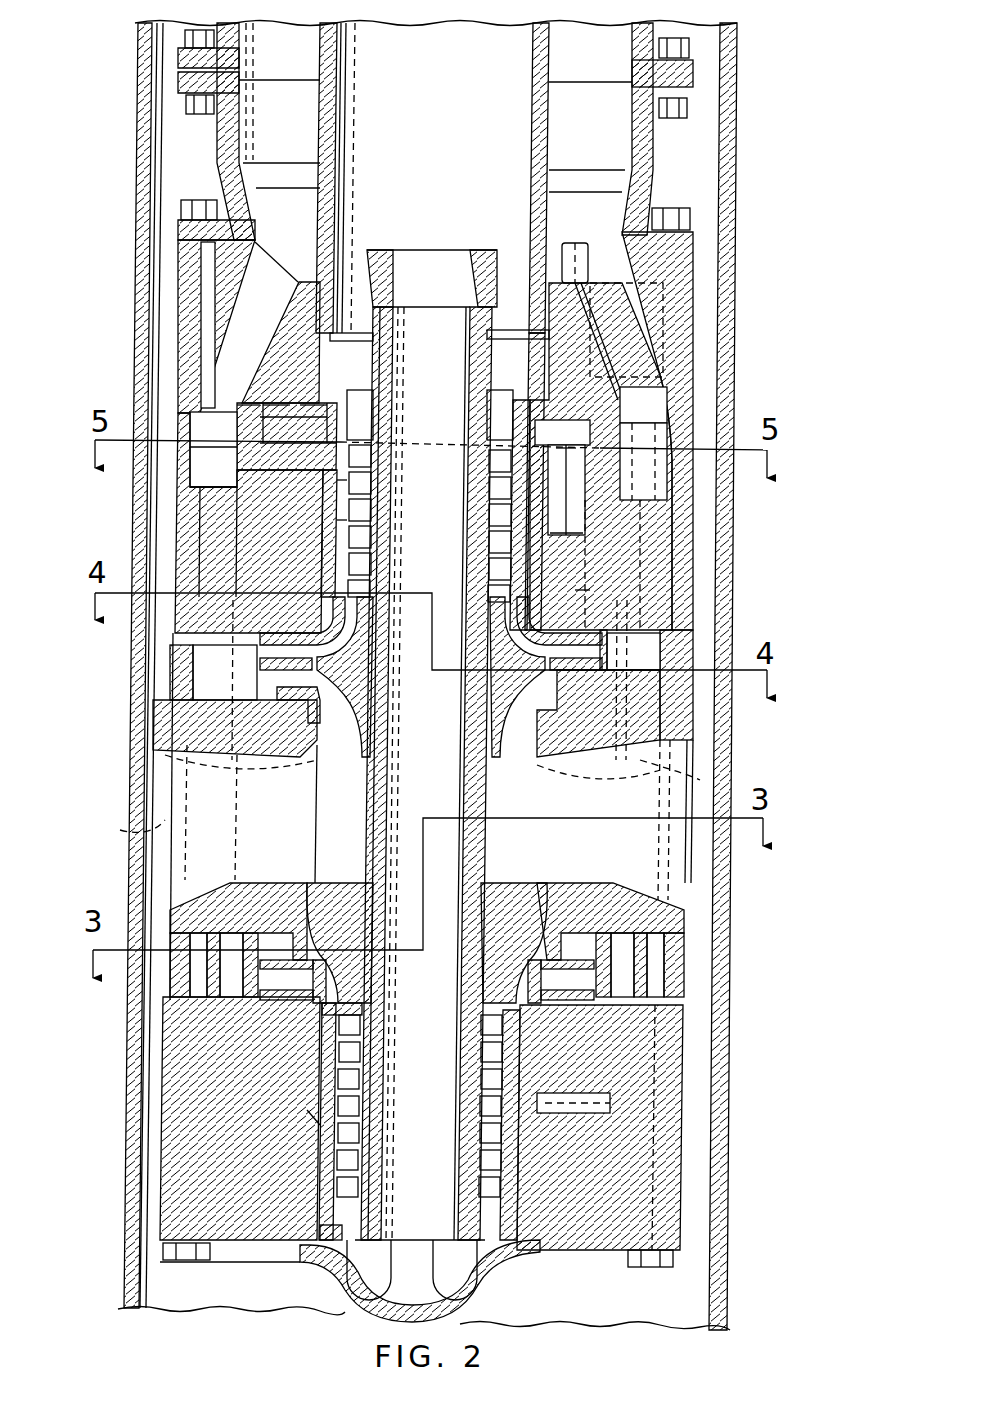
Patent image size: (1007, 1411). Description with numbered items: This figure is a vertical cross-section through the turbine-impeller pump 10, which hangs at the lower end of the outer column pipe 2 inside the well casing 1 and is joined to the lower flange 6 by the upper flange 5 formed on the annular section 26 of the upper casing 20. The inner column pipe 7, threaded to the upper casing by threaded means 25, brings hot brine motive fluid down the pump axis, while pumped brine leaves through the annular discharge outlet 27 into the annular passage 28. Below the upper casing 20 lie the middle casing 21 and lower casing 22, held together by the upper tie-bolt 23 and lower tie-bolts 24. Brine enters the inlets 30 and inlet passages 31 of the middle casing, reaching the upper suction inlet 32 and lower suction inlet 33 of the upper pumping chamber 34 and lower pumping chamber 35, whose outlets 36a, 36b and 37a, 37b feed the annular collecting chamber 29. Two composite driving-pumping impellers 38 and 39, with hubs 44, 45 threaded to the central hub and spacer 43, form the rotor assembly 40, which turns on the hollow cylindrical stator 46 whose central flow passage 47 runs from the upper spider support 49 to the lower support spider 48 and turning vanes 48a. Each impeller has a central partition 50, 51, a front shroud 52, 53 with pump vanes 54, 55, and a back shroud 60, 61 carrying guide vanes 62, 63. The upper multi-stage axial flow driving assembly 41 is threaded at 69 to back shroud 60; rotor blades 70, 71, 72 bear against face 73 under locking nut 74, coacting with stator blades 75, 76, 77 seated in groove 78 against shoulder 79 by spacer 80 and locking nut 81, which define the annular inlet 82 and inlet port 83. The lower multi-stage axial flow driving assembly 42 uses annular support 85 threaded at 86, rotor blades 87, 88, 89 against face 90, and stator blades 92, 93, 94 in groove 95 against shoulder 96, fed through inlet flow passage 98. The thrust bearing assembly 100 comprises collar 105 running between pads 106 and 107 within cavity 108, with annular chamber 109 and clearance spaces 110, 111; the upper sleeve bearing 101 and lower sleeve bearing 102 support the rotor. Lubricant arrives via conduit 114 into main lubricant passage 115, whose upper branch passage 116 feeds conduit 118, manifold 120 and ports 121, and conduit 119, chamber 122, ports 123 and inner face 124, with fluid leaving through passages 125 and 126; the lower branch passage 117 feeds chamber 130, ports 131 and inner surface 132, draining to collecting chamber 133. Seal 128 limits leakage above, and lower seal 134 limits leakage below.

The well casing 1 is at (145, 292).
The outer column pipe 2 is at (648, 38).
The upper flange 5 is at (690, 96).
The lower flange 6 is at (688, 64).
The inner column pipe 7 is at (550, 60).
The turbine-impeller pump 10 is at (702, 250).
The upper casing 20 is at (690, 282).
The middle casing 21 is at (650, 660).
The lower casing 22 is at (685, 1138).
The upper tie-bolt 23 is at (200, 200).
The lower tie-bolts 24 is at (655, 1268).
The threaded means 25 is at (318, 297).
The annular section 26 is at (652, 152).
The annular discharge outlet 27 is at (270, 140).
The annular passage 28 is at (270, 52).
The annular collecting chamber 29 is at (228, 438).
The inlets 30 is at (178, 745).
The inlet passages 31 is at (275, 880).
The upper suction inlet 32 is at (540, 755).
The lower suction inlet 33 is at (320, 885).
The upper pumping chamber 34 is at (240, 622).
The lower pumping chamber 35 is at (240, 1118).
The outlet 36a is at (185, 662).
The outlet 36b is at (680, 700).
The outlet 37a is at (113, 830).
The outlet 37b is at (700, 780).
The composite driving-pumping impeller 38 is at (282, 622).
The composite driving-pumping impeller 39 is at (307, 1005).
The rotor assembly 40 is at (366, 805).
The upper multi-stage axial flow driving assembly 41 is at (340, 550).
The lower multi-stage axial flow driving assembly 42 is at (335, 1142).
The annular elongated central hub and spacer 43 is at (365, 780).
The hub 44 is at (394, 693).
The hub 45 is at (380, 935).
The hollow cylindrical stator or axle 46 is at (386, 812).
The central flow passage 47 is at (443, 777).
The lower support spider 48 is at (382, 1232).
The turning vanes 48a is at (412, 1272).
The upper spider support 49 is at (538, 330).
The central partition 50 is at (292, 670).
The central partition 51 is at (274, 968).
The front shroud 52 is at (280, 697).
The front shroud 53 is at (238, 921).
The pump vanes 54 is at (350, 690).
The pump vanes 55 is at (335, 925).
The back shroud 60 is at (330, 478).
The back shroud 61 is at (303, 1010).
The guide vanes 62 is at (318, 610).
The guide vanes 63 is at (333, 990).
The threaded connection 69 is at (550, 610).
The axial flow rotor blade 70 is at (393, 472).
The axial flow rotor blade 71 is at (385, 548).
The axial flow rotor blade 72 is at (376, 578).
The inner face 73 is at (393, 650).
The upper rotor blade locking nut 74 is at (287, 436).
The annular stator blade 75 is at (384, 452).
The annular stator blade 76 is at (393, 498).
The annular stator blade 77 is at (375, 562).
The upper annular countersunk groove 78 is at (480, 522).
The upper annular shoulder 79 is at (470, 602).
The spacer 80 is at (392, 400).
The upper end locking nut 81 is at (340, 178).
The annular inlet 82 is at (349, 414).
The inlet port 83 is at (443, 302).
The annular support 85 is at (324, 1196).
The threaded connection 86 is at (370, 1000).
The axial flow driving rotor blade 87 is at (372, 1145).
The axial flow driving rotor blade 88 is at (372, 1092).
The axial flow driving rotor blade 89 is at (372, 1032).
The inner face 90 is at (322, 1052).
The annular stator blade 92 is at (372, 1175).
The annular stator blade 93 is at (372, 1118).
The annular stator blade 94 is at (375, 1060).
The lower annular countersunk groove 95 is at (470, 1080).
The lower annular shoulder 96 is at (472, 1045).
The annular inlet flow passage 98 is at (335, 1230).
The thrust bearing assembly 100 is at (284, 414).
The upper sleeve bearing 101 is at (590, 565).
The lower sleeve bearing 102 is at (560, 1042).
The annular thrust bearing collar 105 is at (247, 428).
The upper cylindrical thrust bearing pad 106 is at (308, 414).
The lower cylindrical thrust bearing pad 107 is at (241, 478).
The annular thrust bearing cavity 108 is at (575, 388).
The annular chamber 109 is at (620, 442).
The upper clearance space 110 is at (628, 353).
The lower clearance space 111 is at (600, 472).
The lubricant conduit 114 is at (582, 245).
The main lubricant passage 115 is at (700, 500).
The upper branch passage 116 is at (606, 534).
The lower branch passage 117 is at (598, 1105).
The side connecting conduit 118 is at (572, 516).
The side conduit 119 is at (540, 510).
The common manifold 120 is at (559, 490).
The ports 121 is at (560, 432).
The common annular chamber 122 is at (560, 550).
The ports 123 is at (335, 520).
The inner face 124 is at (335, 494).
The connecting passages 125 is at (600, 497).
The waste passages 126 is at (662, 615).
The seal 128 is at (599, 456).
The annular chamber 130 is at (548, 1122).
The ports 131 is at (310, 1122).
The inner surface 132 is at (310, 1146).
The collecting chamber 133 is at (560, 1216).
The lower seal 134 is at (520, 1252).